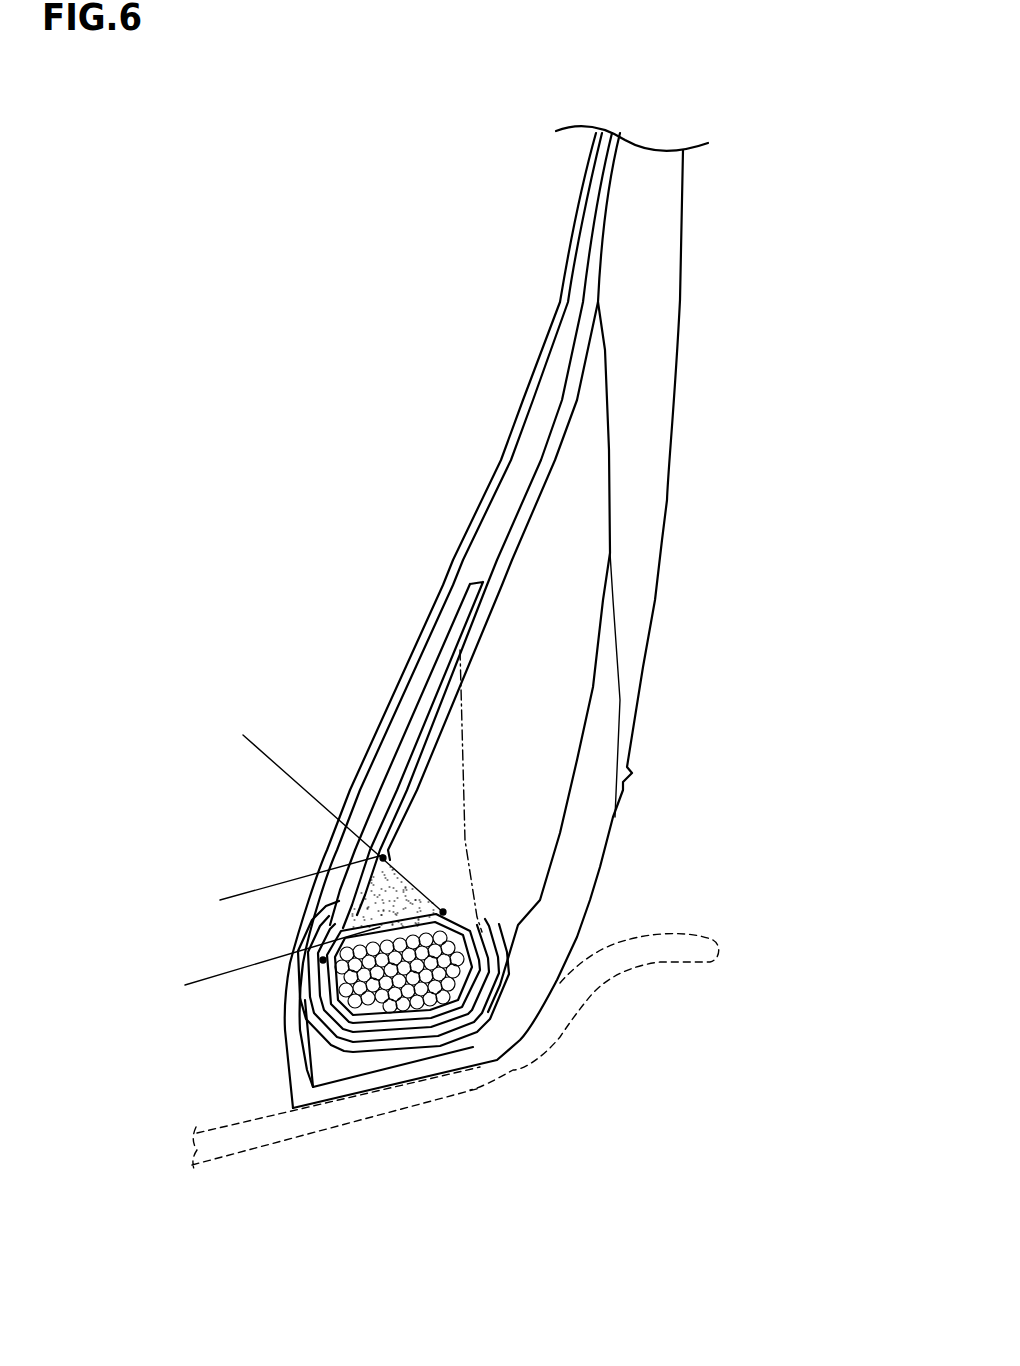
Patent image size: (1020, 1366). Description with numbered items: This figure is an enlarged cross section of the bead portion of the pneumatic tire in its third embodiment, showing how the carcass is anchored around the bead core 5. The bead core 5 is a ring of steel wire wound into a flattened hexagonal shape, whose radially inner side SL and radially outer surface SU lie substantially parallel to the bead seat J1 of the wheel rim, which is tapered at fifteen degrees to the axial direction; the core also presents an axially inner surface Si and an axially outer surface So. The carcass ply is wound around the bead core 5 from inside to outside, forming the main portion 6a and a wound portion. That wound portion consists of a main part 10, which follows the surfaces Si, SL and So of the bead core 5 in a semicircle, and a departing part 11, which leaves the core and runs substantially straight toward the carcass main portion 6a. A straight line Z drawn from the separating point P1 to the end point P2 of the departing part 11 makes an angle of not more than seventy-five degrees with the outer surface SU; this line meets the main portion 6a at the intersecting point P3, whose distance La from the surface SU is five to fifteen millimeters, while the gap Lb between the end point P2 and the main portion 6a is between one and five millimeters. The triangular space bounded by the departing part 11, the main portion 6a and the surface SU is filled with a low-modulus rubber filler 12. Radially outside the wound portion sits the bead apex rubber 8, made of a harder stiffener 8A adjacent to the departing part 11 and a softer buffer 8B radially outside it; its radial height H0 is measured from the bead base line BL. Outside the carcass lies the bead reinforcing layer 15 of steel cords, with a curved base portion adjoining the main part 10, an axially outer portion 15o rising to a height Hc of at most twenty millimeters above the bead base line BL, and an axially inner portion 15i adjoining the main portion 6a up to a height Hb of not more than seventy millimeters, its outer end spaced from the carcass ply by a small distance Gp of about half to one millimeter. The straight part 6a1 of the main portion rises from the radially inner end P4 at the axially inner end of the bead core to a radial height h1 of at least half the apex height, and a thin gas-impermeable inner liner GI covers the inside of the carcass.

The inner liner GI is at (578, 232).
The main portion 6a is at (570, 393).
The straight part 6a1 is at (423, 747).
The small distance Gp is at (493, 568).
The radial height of the bead apex rubber H0 is at (70, 302).
The radial height of the straight part h1 is at (72, 545).
The radial height of the axially inner portion Hb is at (118, 583).
The radial height of the axially outer portion Hc is at (518, 913).
The bead base line BL is at (70, 1058).
The bead apex rubber 8 is at (772, 565).
The stiffener 8A is at (447, 747).
The buffer 8B is at (580, 515).
The axially inner portion 15i is at (437, 677).
The bead reinforcing layer 15 is at (497, 1060).
The axially outer portion 15o is at (513, 952).
The main part 10 is at (470, 1007).
The departing part 11 is at (420, 895).
The bead core 5 is at (387, 982).
The rubber filler 12 is at (347, 906).
The straight line Z is at (266, 742).
The gap Lb is at (410, 805).
The distance La is at (224, 938).
The separating point P1 is at (443, 912).
The end point P2 is at (392, 860).
The intersecting point P3 is at (383, 858).
The radially inner end P4 is at (323, 960).
The axially inner surface Si is at (285, 1005).
The axially outer surface So is at (548, 936).
The radially outer surface SU is at (403, 1010).
The radially inner surface SL is at (410, 1017).
The bead seat J1 is at (282, 1127).